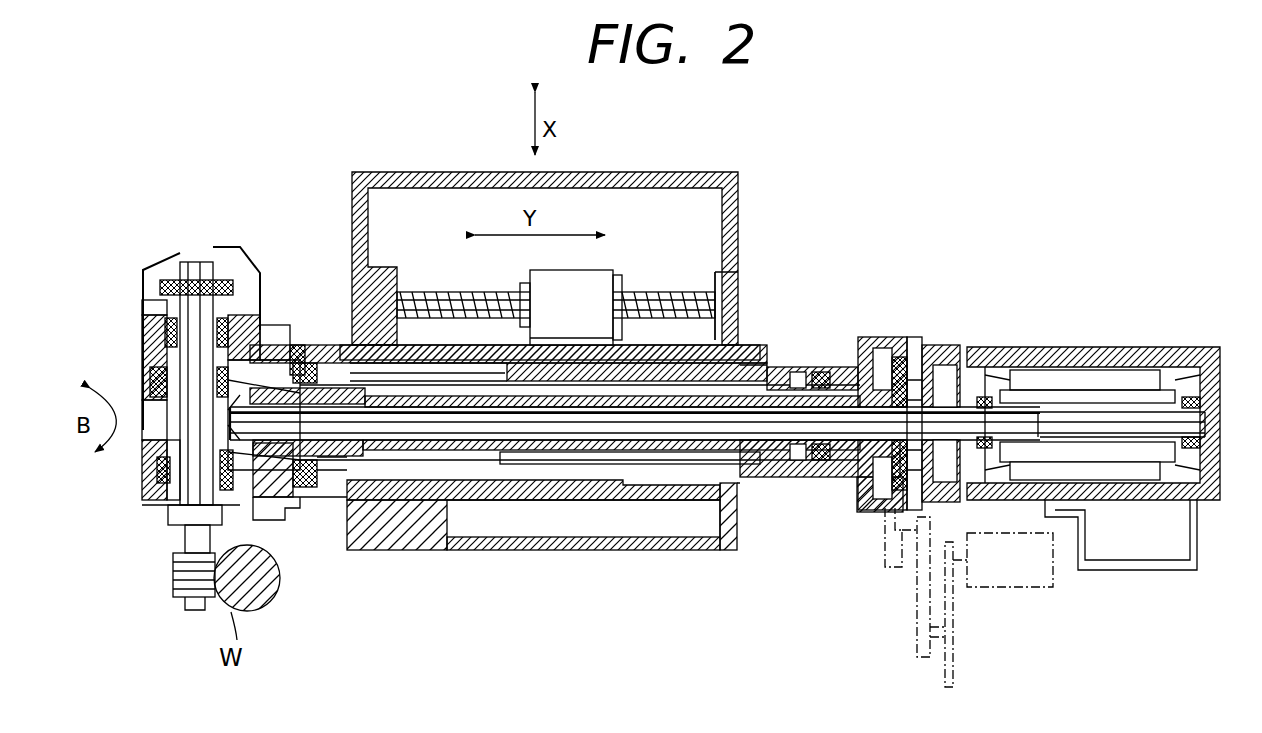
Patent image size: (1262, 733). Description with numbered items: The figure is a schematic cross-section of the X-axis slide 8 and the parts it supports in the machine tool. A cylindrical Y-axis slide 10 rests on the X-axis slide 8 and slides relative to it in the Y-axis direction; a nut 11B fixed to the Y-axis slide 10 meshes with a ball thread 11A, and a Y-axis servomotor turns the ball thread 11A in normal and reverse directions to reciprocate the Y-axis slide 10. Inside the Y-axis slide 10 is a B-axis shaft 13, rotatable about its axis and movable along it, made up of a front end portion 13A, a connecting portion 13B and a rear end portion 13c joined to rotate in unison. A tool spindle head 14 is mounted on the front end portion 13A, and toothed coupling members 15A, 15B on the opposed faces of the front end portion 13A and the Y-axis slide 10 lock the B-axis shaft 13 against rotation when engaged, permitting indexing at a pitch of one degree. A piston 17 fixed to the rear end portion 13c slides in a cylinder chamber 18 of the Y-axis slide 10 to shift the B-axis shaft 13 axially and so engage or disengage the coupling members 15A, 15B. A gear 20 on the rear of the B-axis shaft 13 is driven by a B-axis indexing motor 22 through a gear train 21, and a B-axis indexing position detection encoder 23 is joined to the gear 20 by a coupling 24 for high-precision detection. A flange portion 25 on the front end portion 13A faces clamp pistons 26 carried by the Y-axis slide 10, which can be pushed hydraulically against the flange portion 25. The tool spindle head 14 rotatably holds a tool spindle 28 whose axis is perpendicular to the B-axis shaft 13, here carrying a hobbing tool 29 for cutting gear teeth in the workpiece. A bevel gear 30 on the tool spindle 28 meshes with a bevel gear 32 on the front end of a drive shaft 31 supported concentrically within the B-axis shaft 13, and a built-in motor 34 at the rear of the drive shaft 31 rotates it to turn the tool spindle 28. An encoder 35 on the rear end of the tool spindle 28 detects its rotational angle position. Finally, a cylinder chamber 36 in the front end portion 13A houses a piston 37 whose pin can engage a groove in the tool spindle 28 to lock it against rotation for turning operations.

The X-axis slide 8 is at (658, 172).
The Y-axis slide 10 is at (520, 503).
The ball thread 11A is at (700, 300).
The nut 11B is at (630, 280).
The B-axis shaft 13 is at (490, 453).
The front end portion 13A is at (267, 520).
The connecting portion 13B is at (585, 452).
The rear end portion 13c is at (783, 480).
The tool spindle head 14 is at (160, 513).
The coupling member 15A is at (318, 490).
The coupling member 15B is at (322, 488).
The piston 17 is at (815, 380).
The cylinder chamber 18 is at (800, 380).
The gear 20 is at (880, 365).
The gear train 21 is at (913, 577).
The B-axis indexing motor 22 is at (1013, 593).
The B-axis indexing position detection encoder 23 is at (955, 365).
The coupling 24 is at (912, 365).
The flange portion 25 is at (248, 373).
The clamp piston 26 is at (273, 330).
The tool spindle 28 is at (142, 308).
The hobbing tool 29 is at (173, 585).
The bevel gear 30 is at (137, 393).
The drive shaft 31 is at (660, 423).
The bevel gear 32 is at (145, 455).
The built-in motor 34 is at (1103, 380).
The encoder 35 is at (160, 263).
The cylinder chamber 36 is at (295, 353).
The piston 37 is at (250, 290).